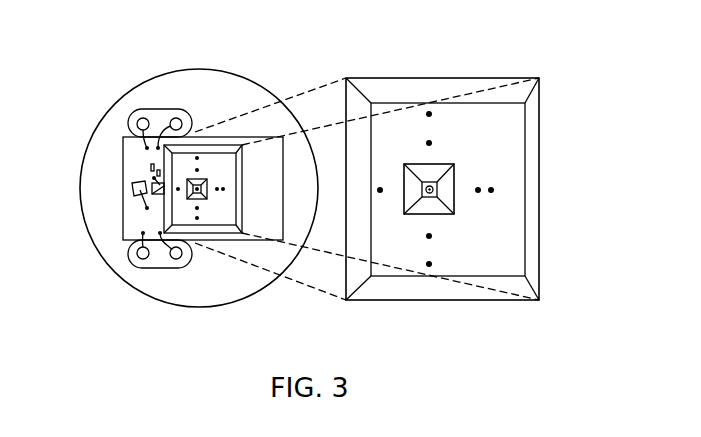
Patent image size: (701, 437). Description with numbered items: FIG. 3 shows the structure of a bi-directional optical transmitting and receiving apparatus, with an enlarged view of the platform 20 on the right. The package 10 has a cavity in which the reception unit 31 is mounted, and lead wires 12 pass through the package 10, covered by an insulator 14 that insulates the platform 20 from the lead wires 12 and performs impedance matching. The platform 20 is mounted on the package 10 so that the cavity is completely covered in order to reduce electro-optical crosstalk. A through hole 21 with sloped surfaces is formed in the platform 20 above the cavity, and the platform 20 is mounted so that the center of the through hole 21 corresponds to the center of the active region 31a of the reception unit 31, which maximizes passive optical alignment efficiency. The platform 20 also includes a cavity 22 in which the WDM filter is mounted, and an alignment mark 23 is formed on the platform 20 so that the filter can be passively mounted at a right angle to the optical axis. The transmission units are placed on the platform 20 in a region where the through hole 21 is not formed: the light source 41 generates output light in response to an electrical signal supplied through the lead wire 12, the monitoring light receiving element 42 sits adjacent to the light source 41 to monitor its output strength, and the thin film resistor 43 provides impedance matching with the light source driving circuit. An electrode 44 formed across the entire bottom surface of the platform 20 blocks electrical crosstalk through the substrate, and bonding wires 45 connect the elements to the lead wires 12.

The package 10 is at (262, 82).
The lead wire 12 is at (137, 123).
The insulator 14 is at (163, 110).
The platform 20 is at (130, 167).
The through hole 21 is at (443, 191).
The cavity 22 is at (495, 136).
The alignment mark 23 is at (497, 189).
The reception unit 31 is at (432, 197).
The lens 31a is at (423, 194).
The light source 41 is at (155, 194).
The monitoring light receiving element 42 is at (133, 196).
The thin film resistor 43 is at (150, 171).
The electrode 44 is at (134, 184).
The ground wires 45 is at (137, 146).